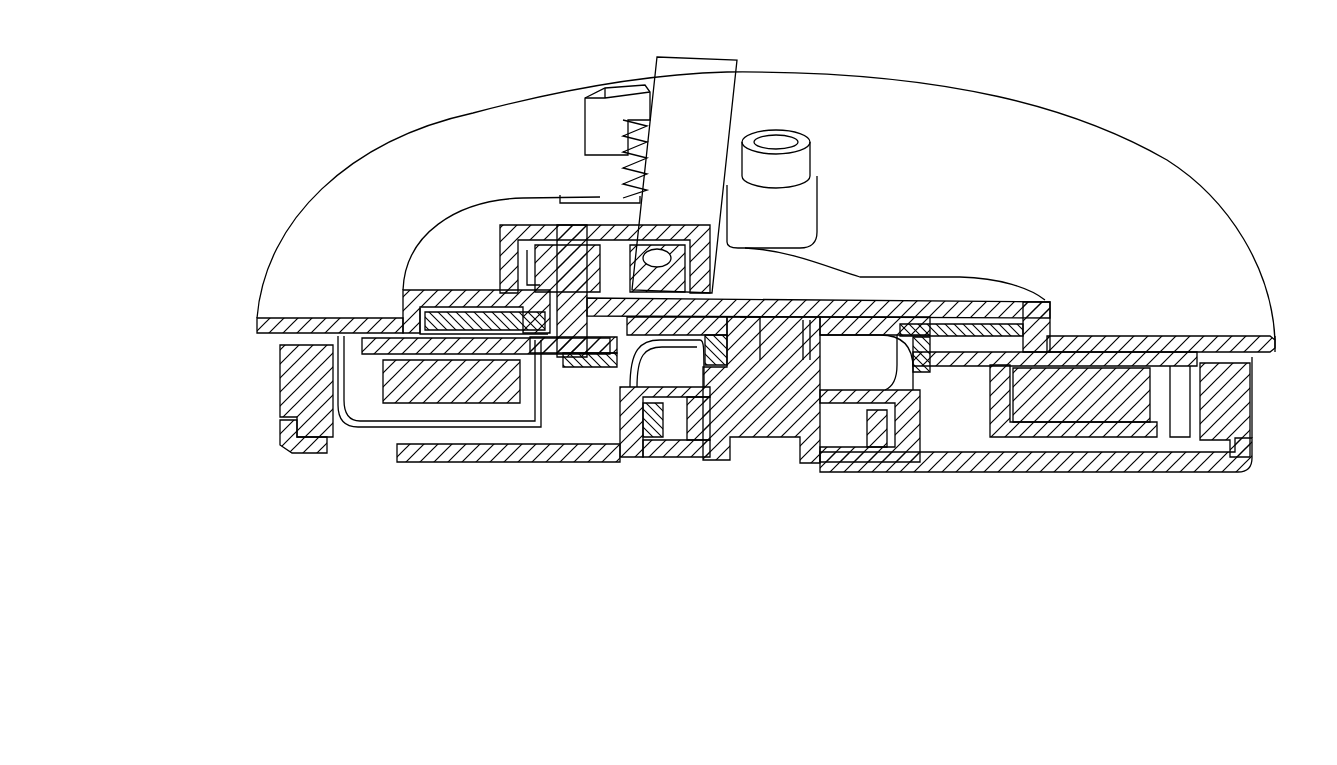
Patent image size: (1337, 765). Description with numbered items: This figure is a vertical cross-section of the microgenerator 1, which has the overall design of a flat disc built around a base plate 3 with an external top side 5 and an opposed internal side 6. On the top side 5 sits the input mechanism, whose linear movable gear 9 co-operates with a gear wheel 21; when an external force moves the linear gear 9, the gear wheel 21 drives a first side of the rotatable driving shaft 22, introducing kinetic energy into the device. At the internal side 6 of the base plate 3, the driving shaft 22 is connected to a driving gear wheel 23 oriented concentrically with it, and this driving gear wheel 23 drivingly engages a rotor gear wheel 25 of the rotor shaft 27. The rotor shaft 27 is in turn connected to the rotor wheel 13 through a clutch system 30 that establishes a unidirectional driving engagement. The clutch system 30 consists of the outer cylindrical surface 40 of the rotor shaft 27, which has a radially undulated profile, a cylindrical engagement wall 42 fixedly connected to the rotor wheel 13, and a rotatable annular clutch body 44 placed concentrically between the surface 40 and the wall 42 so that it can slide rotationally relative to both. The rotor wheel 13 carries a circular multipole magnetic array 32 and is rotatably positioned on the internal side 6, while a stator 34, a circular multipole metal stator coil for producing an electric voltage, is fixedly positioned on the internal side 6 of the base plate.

The microgenerator 1 is at (325, 112).
The base plate 3 is at (1130, 334).
The top side 5 is at (1188, 212).
The internal side 6 is at (1272, 362).
The linear movable gear 9 is at (685, 262).
The rotor wheel 13 is at (932, 470).
The gear wheel 21 is at (540, 262).
The driving shaft 22 is at (572, 345).
The driving gear wheel 23 is at (468, 316).
The rotor gear wheel 25 is at (788, 345).
The rotor shaft 27 is at (770, 400).
The clutch system 30 is at (647, 478).
The circular multipole magnetic array 32 is at (300, 378).
The stator 34 is at (450, 395).
The outer cylindrical surface 40 is at (695, 459).
The cylindrical engagement wall 42 is at (612, 455).
The clutch body 44 is at (656, 455).